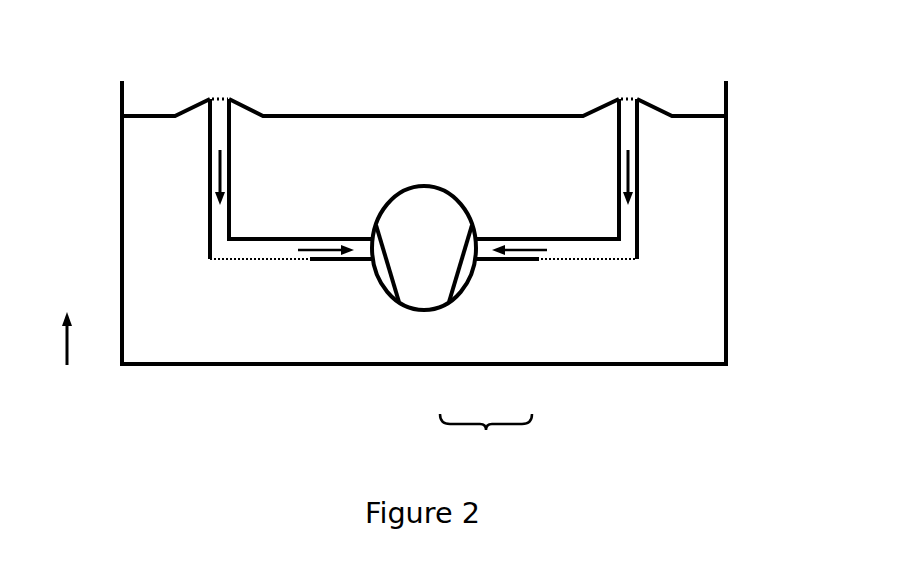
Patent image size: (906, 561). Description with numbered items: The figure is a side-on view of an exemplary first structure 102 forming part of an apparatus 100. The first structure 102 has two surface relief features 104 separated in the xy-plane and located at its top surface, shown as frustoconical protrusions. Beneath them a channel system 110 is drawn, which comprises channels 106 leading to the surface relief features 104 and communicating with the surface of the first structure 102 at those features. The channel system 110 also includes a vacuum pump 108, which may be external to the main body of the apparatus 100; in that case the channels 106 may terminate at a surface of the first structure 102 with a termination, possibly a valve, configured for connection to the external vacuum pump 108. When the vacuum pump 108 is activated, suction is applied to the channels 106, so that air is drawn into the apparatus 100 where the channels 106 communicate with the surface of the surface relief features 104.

The apparatus 100 is at (92, 98).
The first structure 102 is at (440, 116).
The surface relief features 104 is at (247, 104).
The channels 106 is at (567, 260).
The vacuum pump 108 is at (423, 311).
The channel system 110 is at (486, 428).